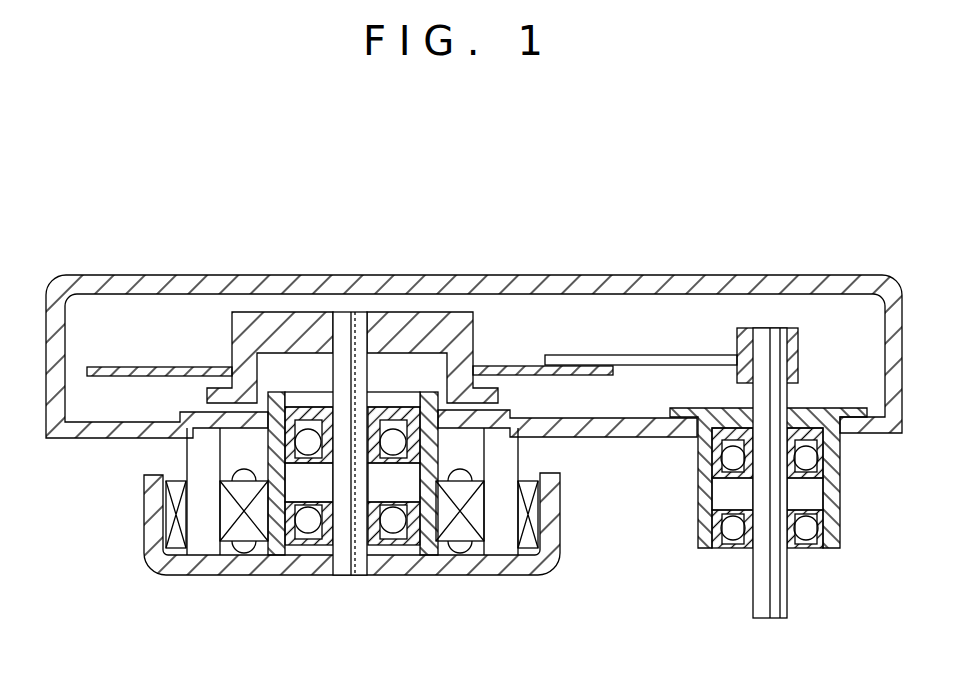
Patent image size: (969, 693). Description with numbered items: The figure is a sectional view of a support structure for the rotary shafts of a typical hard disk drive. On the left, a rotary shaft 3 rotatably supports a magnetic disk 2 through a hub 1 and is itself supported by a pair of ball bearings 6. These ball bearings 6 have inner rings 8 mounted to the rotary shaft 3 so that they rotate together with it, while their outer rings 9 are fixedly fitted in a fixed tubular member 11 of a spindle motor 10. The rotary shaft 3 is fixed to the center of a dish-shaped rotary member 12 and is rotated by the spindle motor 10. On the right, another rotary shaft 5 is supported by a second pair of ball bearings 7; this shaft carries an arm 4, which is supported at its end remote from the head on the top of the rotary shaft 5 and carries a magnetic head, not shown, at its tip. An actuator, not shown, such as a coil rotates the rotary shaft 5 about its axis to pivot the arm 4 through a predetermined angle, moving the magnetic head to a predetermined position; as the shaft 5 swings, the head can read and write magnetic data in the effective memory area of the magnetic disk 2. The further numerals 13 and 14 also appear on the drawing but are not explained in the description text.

The hub 1 is at (393, 322).
The magnetic disk 2 is at (519, 366).
The rotary shaft 3 is at (344, 320).
The arm 4 is at (582, 355).
The rotary shaft 5 is at (760, 340).
The ball bearings 6 is at (394, 410).
The ball bearings 7 is at (827, 521).
The inner rings 8 is at (376, 494).
The outer rings 9 is at (290, 449).
The spindle motor 10 is at (222, 543).
The fixed tubular member 11 is at (438, 540).
The dish-shaped rotary member 12 is at (147, 519).
The inner race 13 is at (378, 535).
The ball bearing 14 is at (717, 520).